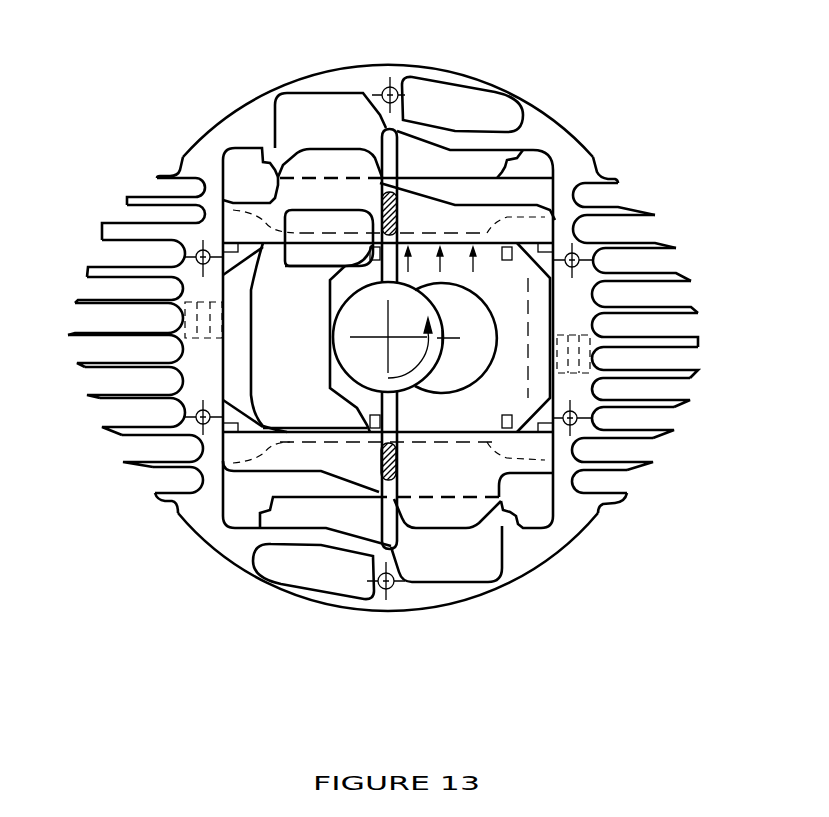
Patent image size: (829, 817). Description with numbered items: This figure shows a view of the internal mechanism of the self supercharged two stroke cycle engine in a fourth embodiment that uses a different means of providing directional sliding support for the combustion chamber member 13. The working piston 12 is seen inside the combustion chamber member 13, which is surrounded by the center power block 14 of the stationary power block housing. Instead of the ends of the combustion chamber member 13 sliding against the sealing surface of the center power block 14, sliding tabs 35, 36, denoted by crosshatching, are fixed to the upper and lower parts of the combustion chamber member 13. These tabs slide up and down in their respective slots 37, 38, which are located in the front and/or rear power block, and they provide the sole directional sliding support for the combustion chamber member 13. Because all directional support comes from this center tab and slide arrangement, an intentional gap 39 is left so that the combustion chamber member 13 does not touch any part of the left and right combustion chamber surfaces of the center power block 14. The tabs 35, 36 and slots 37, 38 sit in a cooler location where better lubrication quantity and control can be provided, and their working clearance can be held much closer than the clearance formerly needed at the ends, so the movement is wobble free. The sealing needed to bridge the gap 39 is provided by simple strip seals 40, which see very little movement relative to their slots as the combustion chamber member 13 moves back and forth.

The working piston 12 is at (460, 268).
The combustion chamber member 13 is at (425, 215).
The block 14 is at (207, 243).
The tab 35 is at (380, 193).
The tab 36 is at (397, 477).
The slot 37 is at (390, 147).
The slot 38 is at (387, 412).
The gap 39 is at (223, 243).
The strip seal 40 is at (200, 240).